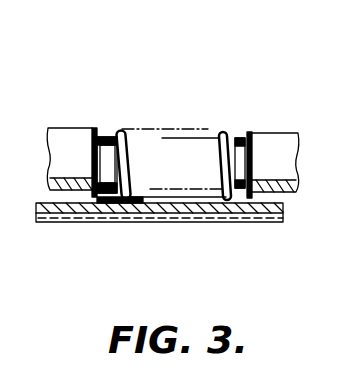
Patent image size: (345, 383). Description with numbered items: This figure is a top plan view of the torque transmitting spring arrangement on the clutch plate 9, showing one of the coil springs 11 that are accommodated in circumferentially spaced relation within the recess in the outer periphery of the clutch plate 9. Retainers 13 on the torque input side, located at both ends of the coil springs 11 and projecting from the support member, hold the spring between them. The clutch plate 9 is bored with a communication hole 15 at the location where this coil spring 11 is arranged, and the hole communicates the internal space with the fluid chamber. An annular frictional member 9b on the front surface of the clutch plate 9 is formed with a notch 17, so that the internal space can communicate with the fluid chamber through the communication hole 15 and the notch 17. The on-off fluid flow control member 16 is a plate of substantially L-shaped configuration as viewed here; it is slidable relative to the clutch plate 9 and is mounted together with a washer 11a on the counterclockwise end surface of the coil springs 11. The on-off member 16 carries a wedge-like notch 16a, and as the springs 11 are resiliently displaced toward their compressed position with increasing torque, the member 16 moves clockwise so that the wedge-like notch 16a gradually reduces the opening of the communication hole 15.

The clutch plate 9 is at (76, 203).
The annular frictional member 9b is at (238, 222).
The coil springs 11 is at (203, 131).
The washer 11a is at (95, 128).
The retainers 13 is at (62, 147).
The communication hole 15 is at (160, 197).
The on-off fluid flow control member 16 is at (100, 134).
The wedge-like notch 16a is at (137, 197).
The notch 17 is at (154, 205).